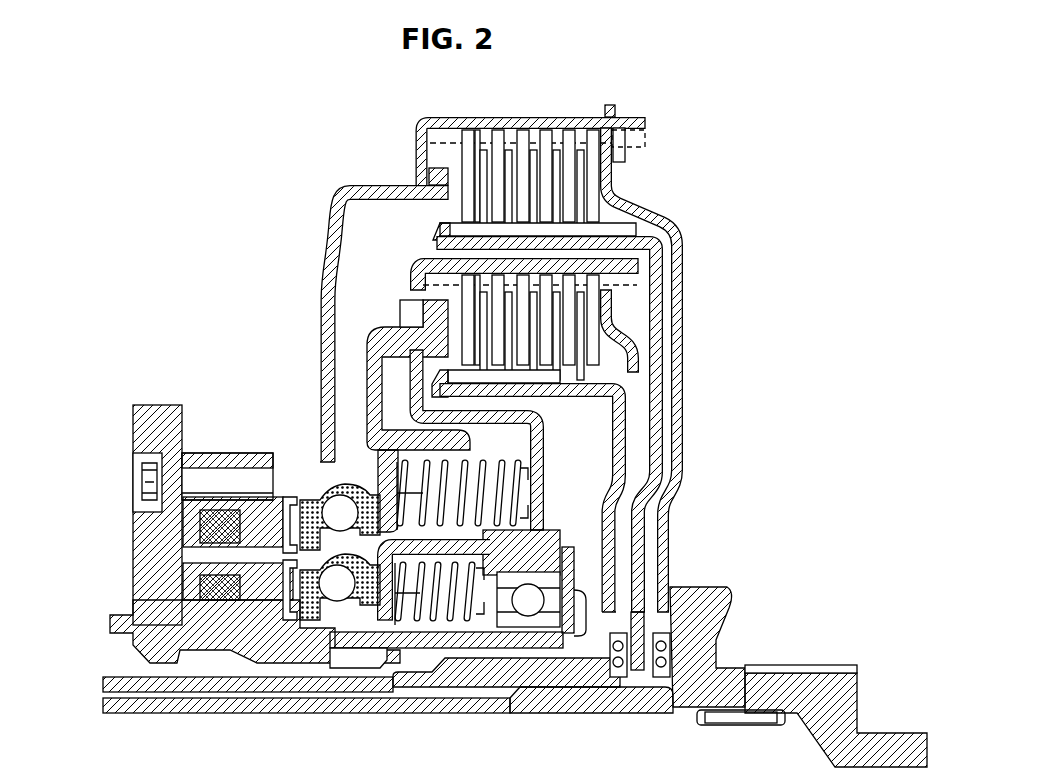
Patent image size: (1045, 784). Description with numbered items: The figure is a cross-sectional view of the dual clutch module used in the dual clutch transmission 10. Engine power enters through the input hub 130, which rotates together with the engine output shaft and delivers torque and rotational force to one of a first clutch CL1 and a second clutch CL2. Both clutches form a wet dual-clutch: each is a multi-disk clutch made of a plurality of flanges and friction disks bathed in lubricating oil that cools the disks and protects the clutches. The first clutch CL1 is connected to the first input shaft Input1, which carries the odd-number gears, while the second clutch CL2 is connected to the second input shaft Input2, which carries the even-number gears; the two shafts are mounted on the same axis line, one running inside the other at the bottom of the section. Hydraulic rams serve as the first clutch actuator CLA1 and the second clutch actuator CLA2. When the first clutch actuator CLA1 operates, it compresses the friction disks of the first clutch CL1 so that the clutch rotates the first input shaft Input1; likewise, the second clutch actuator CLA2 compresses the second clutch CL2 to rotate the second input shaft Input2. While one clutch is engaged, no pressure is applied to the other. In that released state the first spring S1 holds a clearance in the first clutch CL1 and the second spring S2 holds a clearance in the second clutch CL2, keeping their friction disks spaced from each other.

The dual clutch transmission 10 is at (762, 109).
The first clutch CL1 is at (600, 171).
The second clutch CL2 is at (612, 302).
The first spring S1 is at (506, 461).
The second spring S2 is at (435, 635).
The first clutch actuator CLA1 is at (200, 521).
The second clutch actuator CLA2 is at (200, 587).
The first input shaft Input1 is at (110, 702).
The second input shaft Input2 is at (110, 680).
The input hub 130 is at (787, 680).